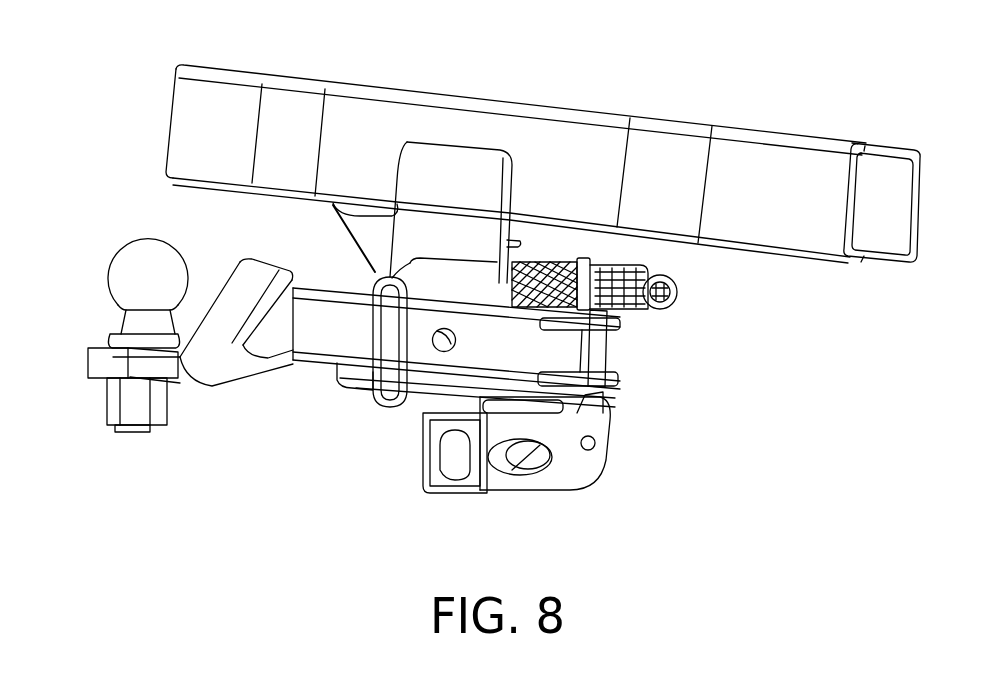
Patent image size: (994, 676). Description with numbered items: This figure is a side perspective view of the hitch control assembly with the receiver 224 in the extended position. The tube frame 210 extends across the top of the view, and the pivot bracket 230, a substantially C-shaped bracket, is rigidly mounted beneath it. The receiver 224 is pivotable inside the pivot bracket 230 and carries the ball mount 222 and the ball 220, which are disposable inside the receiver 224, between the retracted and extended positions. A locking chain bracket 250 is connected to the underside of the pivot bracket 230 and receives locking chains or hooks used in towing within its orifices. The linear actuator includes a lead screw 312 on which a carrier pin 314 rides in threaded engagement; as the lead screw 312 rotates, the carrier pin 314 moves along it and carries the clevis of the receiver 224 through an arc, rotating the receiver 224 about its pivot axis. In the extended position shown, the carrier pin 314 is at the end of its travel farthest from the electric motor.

The tube frame 210 is at (673, 198).
The ball 220 is at (128, 273).
The ball mount 222 is at (293, 335).
The receiver 224 is at (425, 347).
The pivot bracket 230 is at (433, 257).
The locking chain bracket 250 is at (562, 462).
The lead screw 312 is at (677, 297).
The carrier pin 314 is at (603, 310).